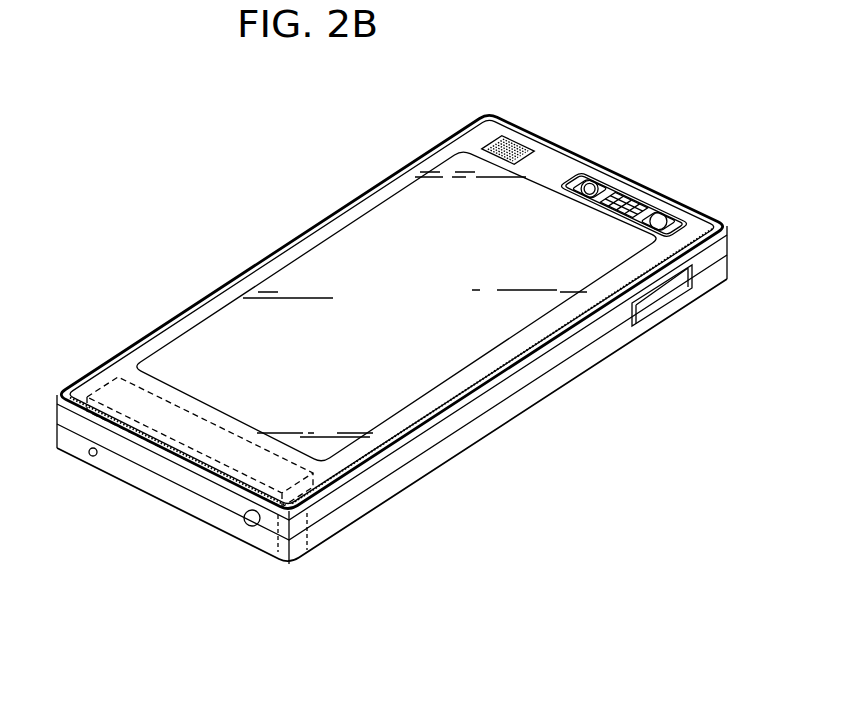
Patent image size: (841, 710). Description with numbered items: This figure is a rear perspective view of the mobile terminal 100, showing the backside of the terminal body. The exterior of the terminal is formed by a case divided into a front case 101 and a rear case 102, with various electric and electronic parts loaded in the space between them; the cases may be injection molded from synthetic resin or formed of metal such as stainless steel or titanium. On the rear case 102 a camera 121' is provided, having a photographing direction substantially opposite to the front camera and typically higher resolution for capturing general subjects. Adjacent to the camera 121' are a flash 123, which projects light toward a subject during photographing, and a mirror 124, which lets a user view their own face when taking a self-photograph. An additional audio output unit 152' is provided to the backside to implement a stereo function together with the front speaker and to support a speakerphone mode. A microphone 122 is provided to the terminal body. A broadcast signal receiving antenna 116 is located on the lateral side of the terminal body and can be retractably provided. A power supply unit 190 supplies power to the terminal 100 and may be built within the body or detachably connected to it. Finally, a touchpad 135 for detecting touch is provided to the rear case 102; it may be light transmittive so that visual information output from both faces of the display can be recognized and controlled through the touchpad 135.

The mobile terminal 100 is at (353, 156).
The front case 101 is at (727, 263).
The rear case 102 is at (723, 247).
The broadcast signal receiving antenna 116 is at (251, 526).
The camera 121' is at (603, 148).
The microphone 122 is at (90, 456).
The flash 123 is at (630, 197).
The mirror 124 is at (661, 216).
The touchpad 135 is at (308, 265).
The audio output unit 152' is at (522, 117).
The power supply unit 190 is at (102, 383).